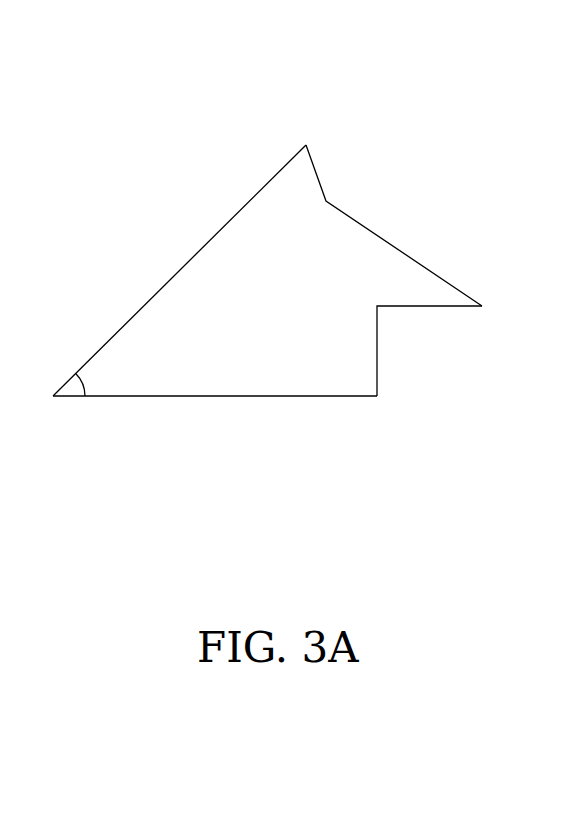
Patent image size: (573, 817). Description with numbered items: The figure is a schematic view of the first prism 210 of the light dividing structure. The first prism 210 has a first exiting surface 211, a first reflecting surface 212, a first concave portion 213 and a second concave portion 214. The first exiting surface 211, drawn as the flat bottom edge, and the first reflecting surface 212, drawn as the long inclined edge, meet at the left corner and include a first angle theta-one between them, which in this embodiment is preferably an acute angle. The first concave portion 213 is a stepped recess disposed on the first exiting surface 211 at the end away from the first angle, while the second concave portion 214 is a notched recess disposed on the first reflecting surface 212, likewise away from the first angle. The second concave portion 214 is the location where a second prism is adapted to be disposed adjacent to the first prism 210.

The first prism 210 is at (180, 42).
The first exiting surface 211 is at (243, 398).
The first reflecting surface 212 is at (150, 298).
The first concave portion 213 is at (425, 335).
The second concave portion 214 is at (377, 215).